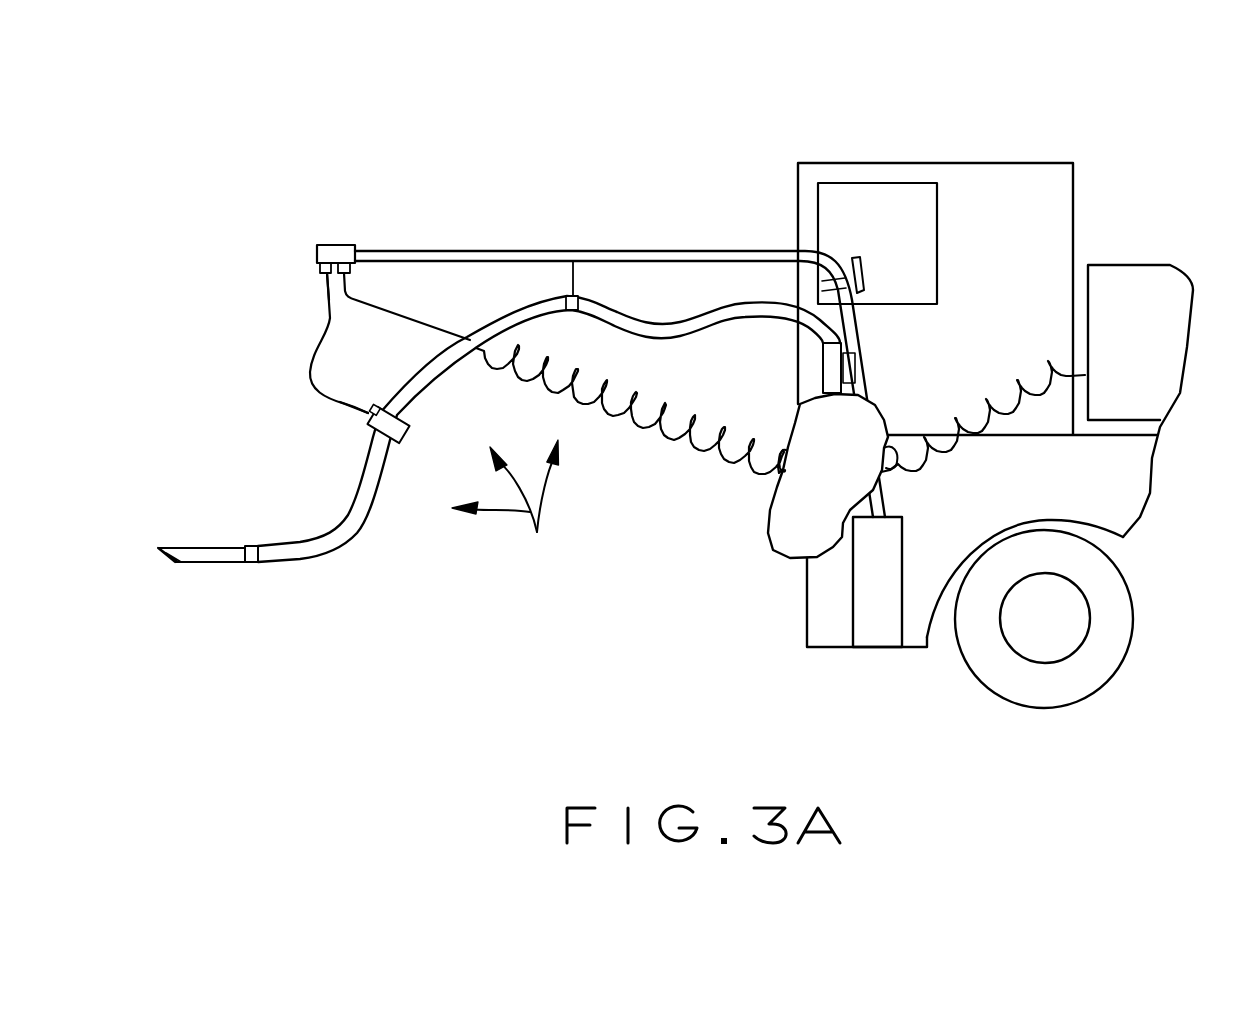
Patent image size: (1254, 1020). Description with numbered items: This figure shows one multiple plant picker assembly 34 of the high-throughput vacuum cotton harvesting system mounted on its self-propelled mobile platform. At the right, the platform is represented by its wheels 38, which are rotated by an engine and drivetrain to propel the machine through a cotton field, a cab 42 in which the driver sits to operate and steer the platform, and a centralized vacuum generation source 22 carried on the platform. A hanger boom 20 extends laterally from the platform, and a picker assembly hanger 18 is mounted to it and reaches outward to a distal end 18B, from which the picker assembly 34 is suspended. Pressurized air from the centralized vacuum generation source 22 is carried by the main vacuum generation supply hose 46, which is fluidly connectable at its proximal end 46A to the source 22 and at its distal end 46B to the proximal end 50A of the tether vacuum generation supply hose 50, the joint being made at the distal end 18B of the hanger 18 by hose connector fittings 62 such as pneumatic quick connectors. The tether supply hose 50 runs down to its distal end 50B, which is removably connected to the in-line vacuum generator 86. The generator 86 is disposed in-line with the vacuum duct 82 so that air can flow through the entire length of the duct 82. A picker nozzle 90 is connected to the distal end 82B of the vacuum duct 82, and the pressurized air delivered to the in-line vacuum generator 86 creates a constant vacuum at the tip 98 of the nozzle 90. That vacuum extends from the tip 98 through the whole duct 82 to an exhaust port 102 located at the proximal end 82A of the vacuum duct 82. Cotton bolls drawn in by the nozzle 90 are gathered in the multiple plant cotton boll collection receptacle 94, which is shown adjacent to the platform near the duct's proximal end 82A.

The picker assembly hanger 18 is at (600, 251).
The distal end of the picker assembly hanger 18B is at (370, 247).
The hose connector fittings 62 is at (318, 268).
The tether vacuum generation supply hose 50 is at (312, 372).
The proximal end of the tether supply hose 50A is at (328, 290).
The distal end of the tether supply hose 50B is at (360, 408).
The distal end of the main vacuum generation supply hose 46B is at (355, 303).
The vacuum duct 82 is at (663, 325).
The in-line vacuum generator 86 is at (407, 433).
The distal end of the vacuum duct 82B is at (277, 553).
The picker nozzle 90 is at (227, 562).
The tip of the picker nozzle 98 is at (173, 558).
The multiple plant picker assembly 34 is at (505, 501).
The main vacuum generation supply hose 46 is at (673, 412).
The proximal end of the main vacuum generation supply hose 46A is at (1085, 375).
The cab 42 is at (925, 176).
The proximal end of the vacuum duct 82A is at (818, 323).
The exhaust port 102 is at (833, 365).
The multiple plant cotton boll collection receptacle 94 is at (802, 507).
The hanger boom 20 is at (870, 593).
The wheels 38 is at (1000, 667).
The centralized vacuum generation source 22 is at (1122, 290).